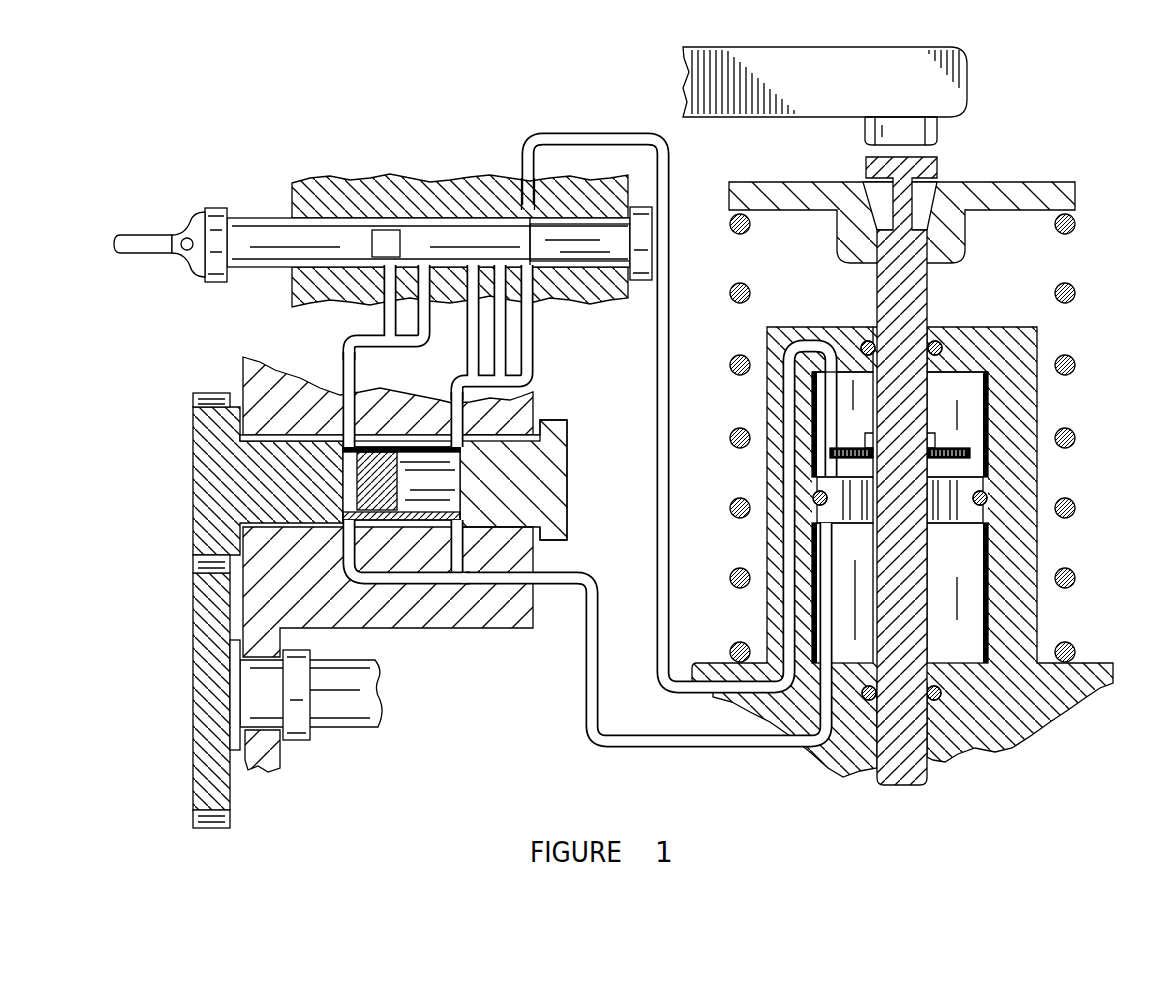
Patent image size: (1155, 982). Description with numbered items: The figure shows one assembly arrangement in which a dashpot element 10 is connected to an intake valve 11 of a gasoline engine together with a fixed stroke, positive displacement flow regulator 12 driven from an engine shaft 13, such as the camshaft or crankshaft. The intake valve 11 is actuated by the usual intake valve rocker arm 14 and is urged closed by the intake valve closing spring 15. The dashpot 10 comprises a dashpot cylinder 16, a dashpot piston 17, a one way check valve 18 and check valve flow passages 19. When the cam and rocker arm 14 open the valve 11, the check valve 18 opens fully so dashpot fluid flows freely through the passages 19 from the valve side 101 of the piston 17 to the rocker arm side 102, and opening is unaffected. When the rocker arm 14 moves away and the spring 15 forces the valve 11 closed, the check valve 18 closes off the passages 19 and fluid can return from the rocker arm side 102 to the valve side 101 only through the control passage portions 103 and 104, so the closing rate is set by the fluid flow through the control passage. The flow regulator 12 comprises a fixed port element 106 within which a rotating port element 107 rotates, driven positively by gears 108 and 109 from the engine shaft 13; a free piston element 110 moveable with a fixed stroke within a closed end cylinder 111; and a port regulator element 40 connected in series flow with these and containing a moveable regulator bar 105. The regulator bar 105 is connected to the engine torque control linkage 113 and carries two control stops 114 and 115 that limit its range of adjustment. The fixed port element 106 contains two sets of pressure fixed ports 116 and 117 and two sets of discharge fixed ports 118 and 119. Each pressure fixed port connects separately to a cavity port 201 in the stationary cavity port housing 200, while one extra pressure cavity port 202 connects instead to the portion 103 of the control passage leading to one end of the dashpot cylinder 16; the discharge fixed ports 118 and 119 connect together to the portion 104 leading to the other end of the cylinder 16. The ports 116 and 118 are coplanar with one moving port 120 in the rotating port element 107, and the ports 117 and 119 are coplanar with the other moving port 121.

The dashpot element 10 is at (1040, 330).
The intake valve 11 is at (930, 770).
The fixed stroke, positive displacement flow regulator 12 is at (570, 435).
The engine shaft 13 is at (380, 700).
The intake valve rocker arm 14 is at (953, 60).
The intake valve closing spring 15 is at (1075, 437).
The dashpot cylinder 16 is at (1010, 620).
The dashpot piston 17 is at (875, 520).
The one way check valve 18 is at (945, 452).
The check valve flow passage 19 is at (950, 525).
The port regulator element 40 is at (405, 185).
The valve side 101 is at (845, 600).
The rocker arm side 102 is at (845, 430).
The control passage portion 103 is at (668, 350).
The control passage portion 104 is at (652, 750).
The moveable regulator bar 105 is at (265, 218).
The fixed port element 106 is at (538, 408).
The rotating port element 107 is at (568, 480).
The gear 108 is at (193, 420).
The gear 109 is at (195, 625).
The free piston element 110 is at (365, 480).
The closed end cylinder 111 is at (420, 497).
The engine torque control linkage 113 is at (150, 235).
The control stop 114 is at (215, 208).
The control stop 115 is at (645, 205).
The pressure fixed ports 116 is at (343, 410).
The pressure fixed ports 117 is at (455, 412).
The discharge fixed ports 118 is at (350, 530).
The discharge fixed ports 119 is at (460, 530).
The moving port 120 is at (345, 440).
The moving port 121 is at (457, 515).
The stationary cavity port housing 200 is at (480, 185).
The cavity port 201 is at (533, 350).
The extra pressure cavity port 202 is at (527, 200).